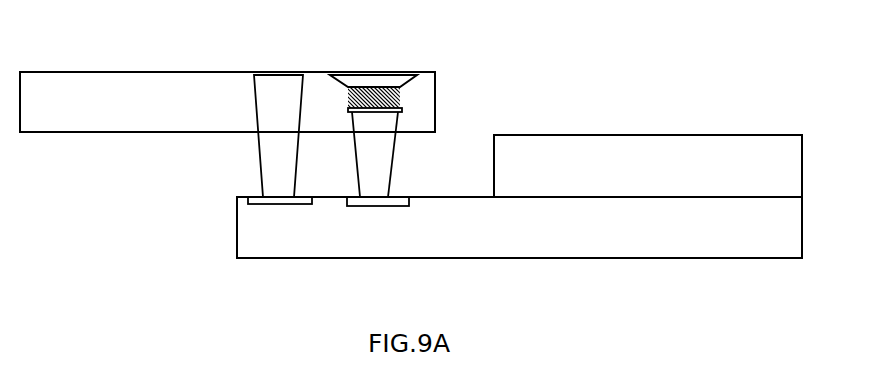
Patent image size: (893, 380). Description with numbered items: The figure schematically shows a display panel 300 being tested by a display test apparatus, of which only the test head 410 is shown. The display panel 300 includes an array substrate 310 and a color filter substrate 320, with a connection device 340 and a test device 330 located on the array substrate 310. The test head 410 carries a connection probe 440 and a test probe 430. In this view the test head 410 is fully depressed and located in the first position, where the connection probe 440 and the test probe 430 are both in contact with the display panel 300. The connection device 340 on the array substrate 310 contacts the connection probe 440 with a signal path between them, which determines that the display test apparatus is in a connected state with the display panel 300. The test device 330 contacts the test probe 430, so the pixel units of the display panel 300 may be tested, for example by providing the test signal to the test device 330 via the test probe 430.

The test head 410 is at (227, 102).
The connection probe 440 is at (284, 70).
The test probe 430 is at (380, 71).
The display panel 300 is at (519, 214).
The color filter substrate 320 is at (648, 166).
The array substrate 310 is at (519, 227).
The connection device 340 is at (236, 202).
The test device 330 is at (381, 213).